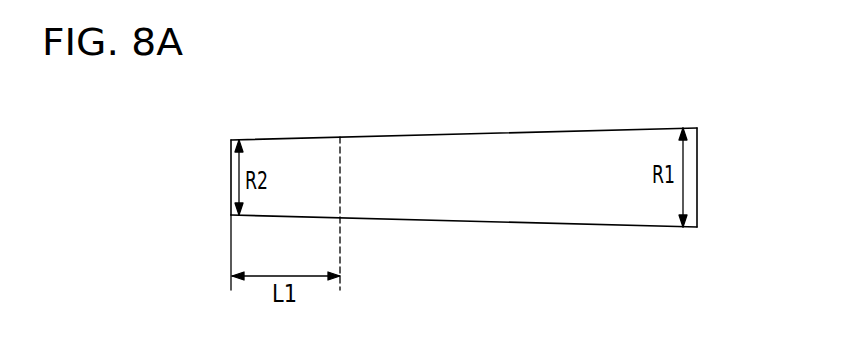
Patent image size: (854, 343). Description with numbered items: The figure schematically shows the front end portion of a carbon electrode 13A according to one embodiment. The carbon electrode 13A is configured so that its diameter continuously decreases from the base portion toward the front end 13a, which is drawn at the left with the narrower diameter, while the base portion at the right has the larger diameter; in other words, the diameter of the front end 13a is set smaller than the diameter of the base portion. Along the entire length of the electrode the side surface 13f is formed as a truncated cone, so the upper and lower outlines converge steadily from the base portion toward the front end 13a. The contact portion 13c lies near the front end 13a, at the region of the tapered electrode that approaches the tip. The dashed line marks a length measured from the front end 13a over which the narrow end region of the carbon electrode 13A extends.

The carbon electrode 13A is at (432, 204).
The front end 13a is at (231, 178).
The contact portion 13c is at (290, 119).
The side surface 13f is at (380, 220).